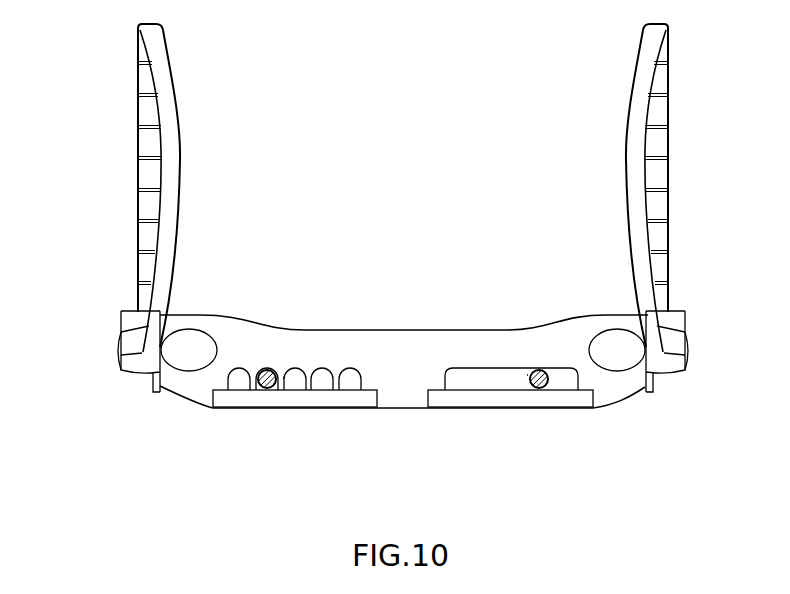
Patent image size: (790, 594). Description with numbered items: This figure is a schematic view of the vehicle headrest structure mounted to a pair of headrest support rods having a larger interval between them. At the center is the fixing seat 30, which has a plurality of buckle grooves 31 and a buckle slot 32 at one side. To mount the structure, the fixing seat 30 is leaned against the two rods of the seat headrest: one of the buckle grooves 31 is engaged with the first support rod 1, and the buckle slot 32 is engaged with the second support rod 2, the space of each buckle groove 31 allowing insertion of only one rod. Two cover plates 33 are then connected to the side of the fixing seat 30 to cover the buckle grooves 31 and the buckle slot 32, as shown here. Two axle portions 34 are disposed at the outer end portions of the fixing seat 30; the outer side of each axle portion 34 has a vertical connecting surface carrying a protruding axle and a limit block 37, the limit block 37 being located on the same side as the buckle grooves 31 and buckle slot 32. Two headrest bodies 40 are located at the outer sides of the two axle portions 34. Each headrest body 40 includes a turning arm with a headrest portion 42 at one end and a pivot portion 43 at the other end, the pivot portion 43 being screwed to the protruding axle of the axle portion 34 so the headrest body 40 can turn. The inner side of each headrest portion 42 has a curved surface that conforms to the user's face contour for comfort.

The support rod 1 is at (283, 378).
The second support rod 2 is at (262, 372).
The fixing seat 30 is at (450, 345).
The buckle grooves 31 is at (355, 372).
The buckle slot 32 is at (487, 375).
The cover plates 33 is at (520, 407).
The axle portions 34 is at (147, 384).
The limit block 37 is at (652, 393).
The headrest bodies 40 is at (110, 163).
The headrest portion 42 is at (183, 212).
The pivot portion 43 is at (140, 372).